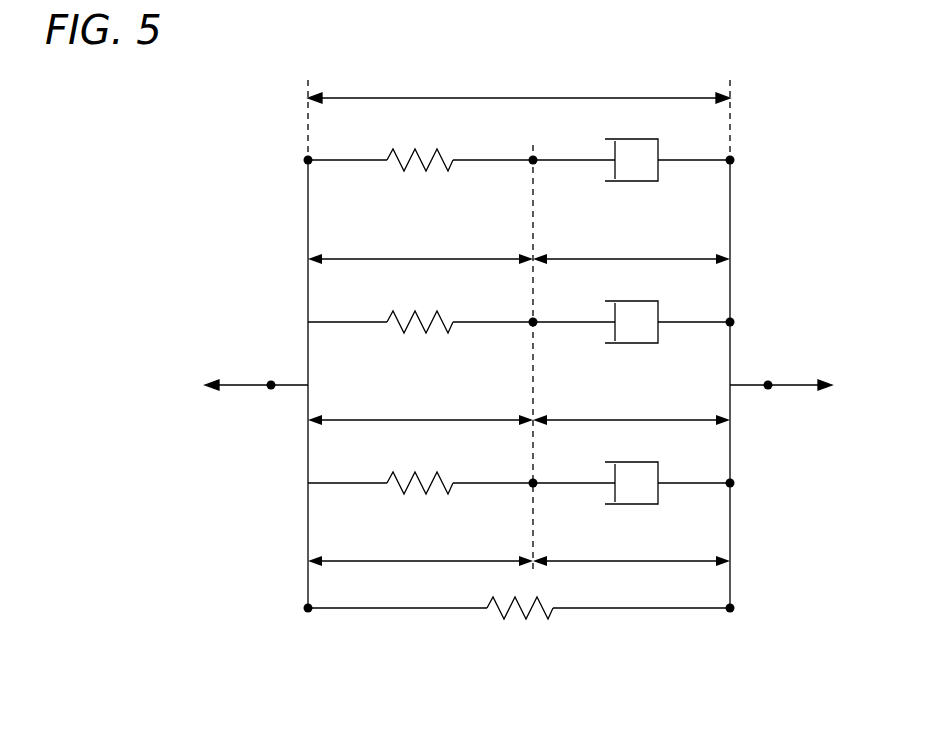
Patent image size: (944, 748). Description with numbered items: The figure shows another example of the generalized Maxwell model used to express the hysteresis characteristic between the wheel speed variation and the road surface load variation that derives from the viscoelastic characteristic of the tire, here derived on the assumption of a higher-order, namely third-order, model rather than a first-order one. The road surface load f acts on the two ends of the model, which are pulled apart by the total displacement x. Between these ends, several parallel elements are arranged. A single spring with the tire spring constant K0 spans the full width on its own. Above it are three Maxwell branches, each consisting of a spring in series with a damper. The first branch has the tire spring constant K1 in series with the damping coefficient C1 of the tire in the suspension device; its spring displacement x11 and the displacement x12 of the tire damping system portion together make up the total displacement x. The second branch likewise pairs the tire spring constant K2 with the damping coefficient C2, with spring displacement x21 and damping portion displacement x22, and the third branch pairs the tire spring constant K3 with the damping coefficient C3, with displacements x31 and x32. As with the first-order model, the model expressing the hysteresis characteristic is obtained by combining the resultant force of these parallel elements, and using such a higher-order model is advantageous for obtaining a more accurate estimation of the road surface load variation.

The tire spring constant K0 is at (519, 628).
The tire spring constant K1 is at (420, 468).
The tire spring constant K2 is at (420, 307).
The tire spring constant K3 is at (420, 145).
The damping coefficient C1 is at (631, 469).
The damping coefficient C2 is at (631, 308).
The damping coefficient C3 is at (631, 146).
The total displacement x is at (519, 84).
The spring displacement x11 is at (420, 549).
The displacement of tire damping system portion x12 is at (631, 549).
The spring displacement x21 is at (420, 408).
The displacement of tire damping system portion x22 is at (631, 408).
The spring displacement x31 is at (420, 247).
The displacement of tire damping system portion x32 is at (631, 247).
The road surface load f is at (517, 386).